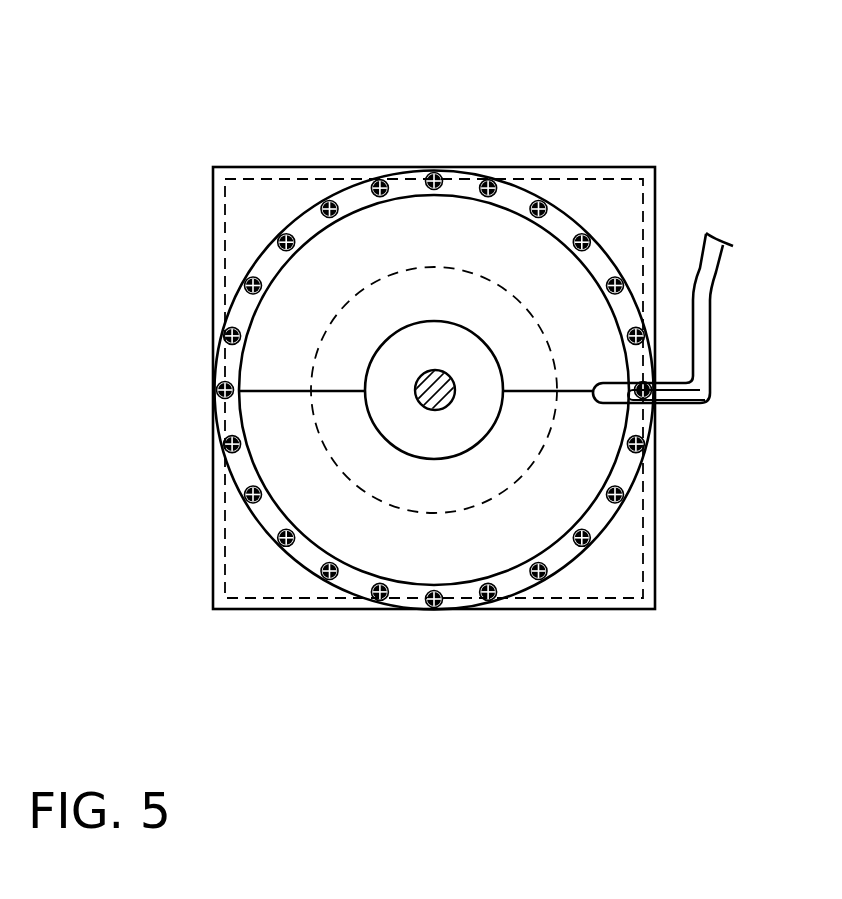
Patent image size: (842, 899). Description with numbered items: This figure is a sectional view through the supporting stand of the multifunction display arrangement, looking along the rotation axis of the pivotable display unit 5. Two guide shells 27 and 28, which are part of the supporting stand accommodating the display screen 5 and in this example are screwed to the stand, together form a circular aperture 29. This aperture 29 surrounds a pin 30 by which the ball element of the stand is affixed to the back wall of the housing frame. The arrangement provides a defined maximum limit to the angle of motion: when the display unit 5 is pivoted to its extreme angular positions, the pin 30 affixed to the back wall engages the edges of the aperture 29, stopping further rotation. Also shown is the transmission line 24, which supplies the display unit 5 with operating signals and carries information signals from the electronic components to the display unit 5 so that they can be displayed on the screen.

The display unit 5 is at (230, 184).
The guide shell 27 is at (382, 248).
The guide shell 28 is at (344, 513).
The circular aperture 29 is at (468, 355).
The pin 30 is at (433, 392).
The transmission line 24 is at (700, 392).